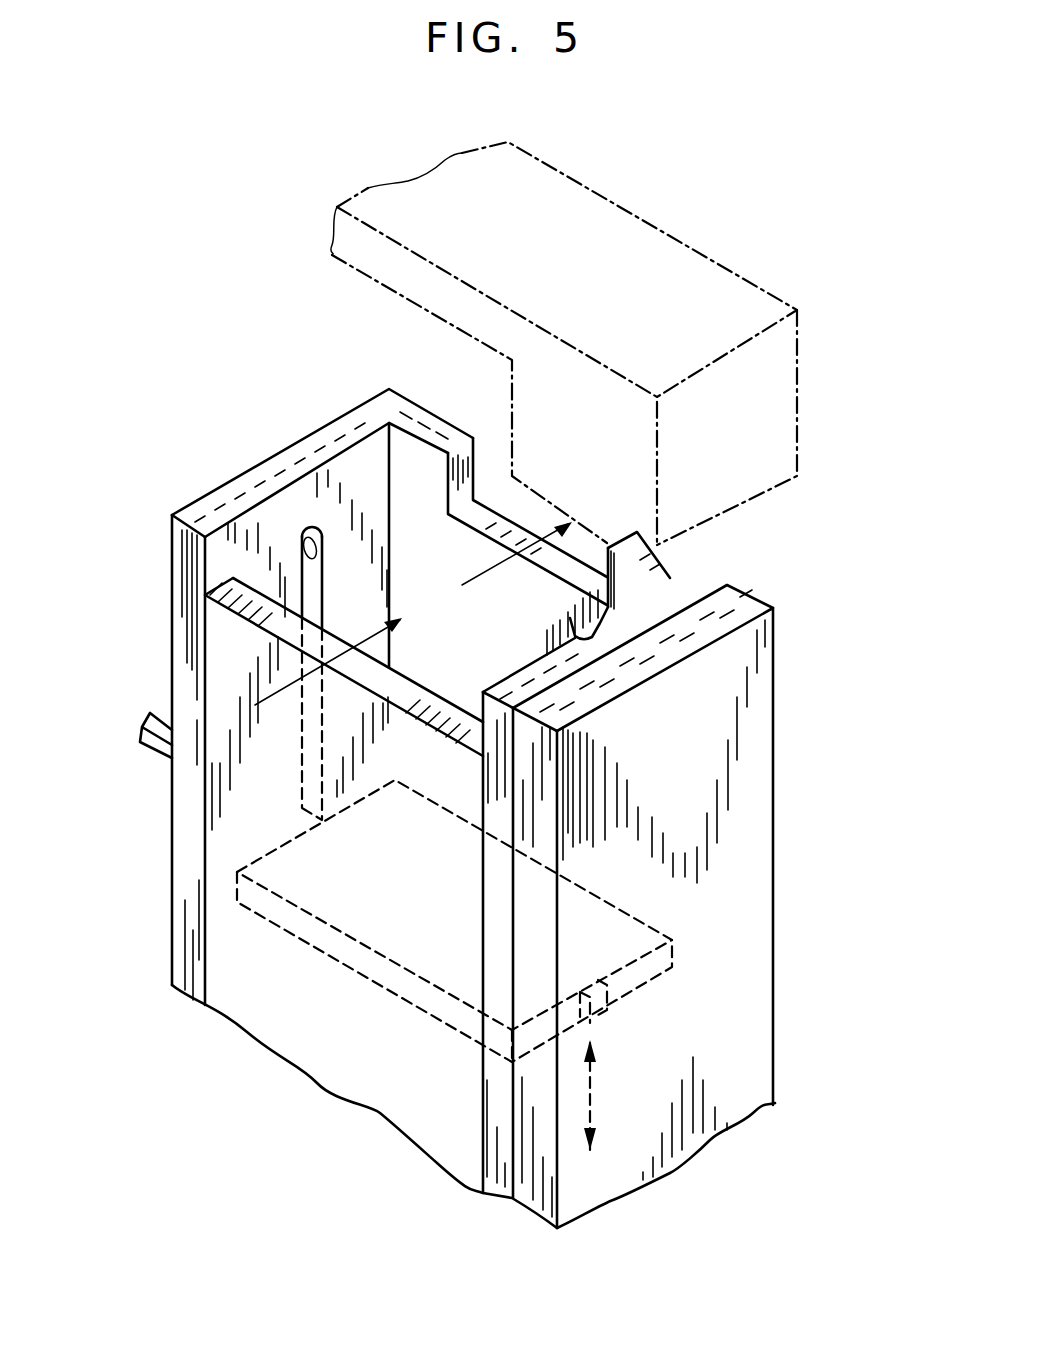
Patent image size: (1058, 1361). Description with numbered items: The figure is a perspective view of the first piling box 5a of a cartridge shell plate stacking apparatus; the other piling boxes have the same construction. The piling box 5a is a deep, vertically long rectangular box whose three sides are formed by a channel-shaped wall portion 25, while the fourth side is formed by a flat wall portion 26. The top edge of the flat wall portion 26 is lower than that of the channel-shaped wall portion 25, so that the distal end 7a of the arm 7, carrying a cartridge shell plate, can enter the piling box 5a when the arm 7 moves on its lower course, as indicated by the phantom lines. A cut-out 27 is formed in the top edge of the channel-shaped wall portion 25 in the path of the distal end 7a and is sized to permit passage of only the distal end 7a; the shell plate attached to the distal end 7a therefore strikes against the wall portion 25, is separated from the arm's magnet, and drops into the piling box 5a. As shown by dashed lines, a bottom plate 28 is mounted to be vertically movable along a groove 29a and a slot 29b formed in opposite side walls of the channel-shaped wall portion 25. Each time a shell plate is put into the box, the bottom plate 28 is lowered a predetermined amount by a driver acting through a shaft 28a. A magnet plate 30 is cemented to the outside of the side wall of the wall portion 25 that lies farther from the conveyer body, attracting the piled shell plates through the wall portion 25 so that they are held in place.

The piling box 5a is at (150, 900).
The arm 7 is at (632, 205).
The distal end of the arm 7a is at (800, 413).
The channel-shaped wall portion 25 is at (697, 577).
The flat wall portion 26 is at (228, 653).
The cut-out 27 is at (460, 472).
The bottom plate 28 is at (417, 962).
The shaft 28a is at (140, 745).
The groove 29a is at (570, 618).
The slot 29b is at (313, 530).
The magnet plate 30 is at (778, 810).